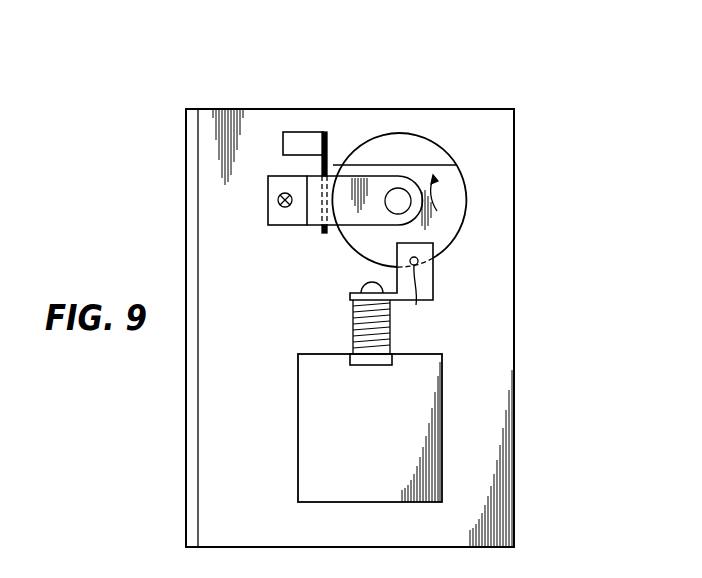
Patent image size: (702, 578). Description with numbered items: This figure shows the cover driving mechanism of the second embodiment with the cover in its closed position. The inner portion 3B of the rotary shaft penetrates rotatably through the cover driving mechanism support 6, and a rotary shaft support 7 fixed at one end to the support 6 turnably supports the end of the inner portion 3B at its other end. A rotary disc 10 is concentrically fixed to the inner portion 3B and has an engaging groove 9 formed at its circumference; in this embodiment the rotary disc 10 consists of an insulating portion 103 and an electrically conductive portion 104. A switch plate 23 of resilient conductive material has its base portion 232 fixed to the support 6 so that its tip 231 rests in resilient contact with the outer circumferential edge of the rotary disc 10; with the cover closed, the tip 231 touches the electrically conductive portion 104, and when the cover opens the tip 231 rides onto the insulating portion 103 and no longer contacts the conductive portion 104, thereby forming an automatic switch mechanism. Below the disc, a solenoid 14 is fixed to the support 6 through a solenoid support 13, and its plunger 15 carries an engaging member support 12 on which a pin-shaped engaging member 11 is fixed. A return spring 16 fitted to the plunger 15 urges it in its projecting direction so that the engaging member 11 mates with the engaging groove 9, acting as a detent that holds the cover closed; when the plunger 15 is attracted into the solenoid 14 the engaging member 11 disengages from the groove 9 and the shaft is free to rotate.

The cover driving mechanism support 6 is at (302, 117).
The switch plate 23 is at (330, 168).
The base portion 232 is at (296, 143).
The tip 231 is at (321, 233).
The rotary shaft support 7 is at (290, 221).
The inner portion of the rotary shaft 3B is at (395, 205).
The insulating portion 103 is at (398, 143).
The rotary disc 10 is at (468, 168).
The electrically conductive portion 104 is at (458, 207).
The engaging groove 9 is at (421, 262).
The engaging member support 12 is at (428, 287).
The engaging member 11 is at (422, 298).
The return spring 16 is at (371, 306).
The plunger 15 is at (386, 337).
The solenoid support 13 is at (443, 420).
The solenoid 14 is at (325, 432).